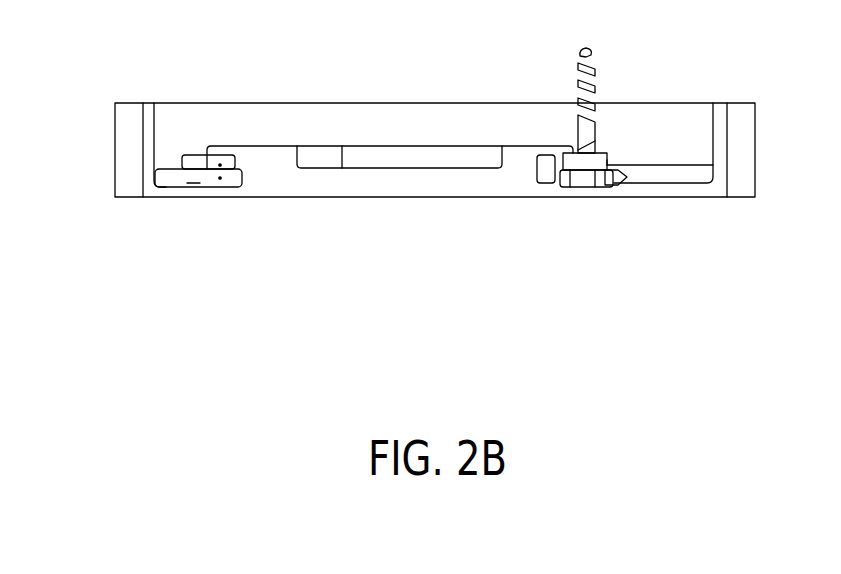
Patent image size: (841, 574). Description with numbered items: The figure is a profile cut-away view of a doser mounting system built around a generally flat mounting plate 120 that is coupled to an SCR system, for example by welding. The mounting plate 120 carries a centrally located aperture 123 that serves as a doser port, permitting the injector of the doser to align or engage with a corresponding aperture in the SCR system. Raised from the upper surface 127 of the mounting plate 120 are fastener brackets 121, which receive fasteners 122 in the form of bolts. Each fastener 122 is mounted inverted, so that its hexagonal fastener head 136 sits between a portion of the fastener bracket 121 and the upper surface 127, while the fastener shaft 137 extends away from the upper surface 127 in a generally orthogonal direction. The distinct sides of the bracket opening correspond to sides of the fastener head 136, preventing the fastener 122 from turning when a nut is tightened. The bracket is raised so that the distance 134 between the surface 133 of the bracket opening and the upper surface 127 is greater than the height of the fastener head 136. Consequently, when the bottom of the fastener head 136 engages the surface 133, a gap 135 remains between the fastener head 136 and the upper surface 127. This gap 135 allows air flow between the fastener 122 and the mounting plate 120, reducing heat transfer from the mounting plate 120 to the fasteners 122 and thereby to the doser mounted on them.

The mounting plate 120 is at (368, 185).
The fastener bracket 121 is at (545, 146).
The fastener 122 is at (590, 147).
The aperture 123 is at (425, 146).
The upper surface 127 is at (220, 166).
The surface 133 is at (218, 157).
The distance 134 is at (172, 172).
The gap 135 is at (627, 178).
The fastener head 136 is at (607, 160).
The fastener shaft 137 is at (596, 95).